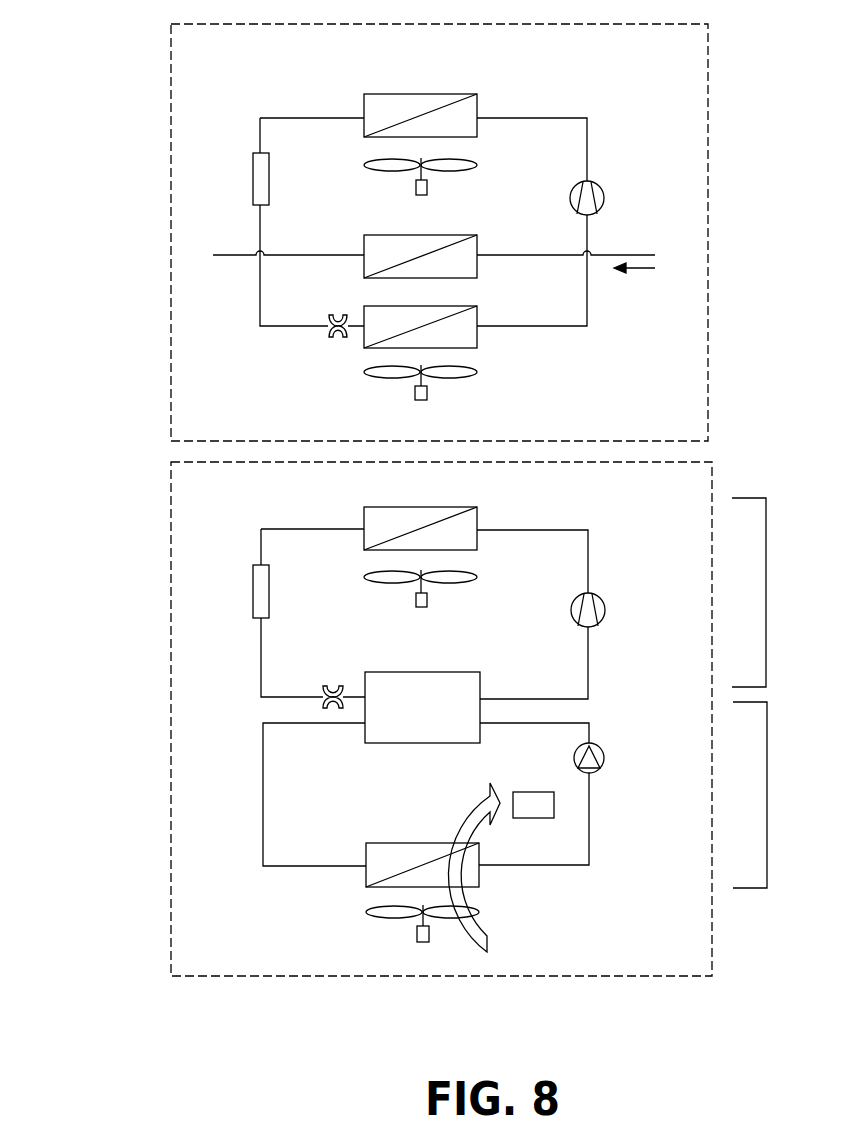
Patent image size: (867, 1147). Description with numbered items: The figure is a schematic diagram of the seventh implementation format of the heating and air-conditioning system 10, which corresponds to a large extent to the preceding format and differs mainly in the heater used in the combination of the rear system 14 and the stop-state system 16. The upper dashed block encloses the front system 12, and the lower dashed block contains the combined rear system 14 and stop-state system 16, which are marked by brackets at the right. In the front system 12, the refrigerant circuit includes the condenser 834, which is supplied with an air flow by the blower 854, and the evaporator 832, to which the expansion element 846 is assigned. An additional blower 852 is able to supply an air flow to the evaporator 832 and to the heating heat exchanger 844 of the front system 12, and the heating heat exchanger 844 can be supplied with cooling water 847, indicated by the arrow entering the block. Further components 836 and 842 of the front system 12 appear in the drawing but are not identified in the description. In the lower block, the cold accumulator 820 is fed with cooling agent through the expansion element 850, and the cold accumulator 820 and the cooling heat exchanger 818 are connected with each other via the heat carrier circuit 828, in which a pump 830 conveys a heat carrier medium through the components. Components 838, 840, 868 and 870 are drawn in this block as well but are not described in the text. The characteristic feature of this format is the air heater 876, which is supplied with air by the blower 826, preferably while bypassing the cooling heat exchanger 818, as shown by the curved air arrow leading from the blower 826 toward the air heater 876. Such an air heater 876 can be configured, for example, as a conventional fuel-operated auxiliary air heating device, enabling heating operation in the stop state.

The heating and air-conditioning system 10 is at (120, 97).
The front system 12 is at (708, 203).
The rear system 14 is at (766, 579).
The stop-state system 16 is at (767, 800).
The cooling heat exchanger 818 is at (479, 878).
The cold accumulator 820 is at (480, 688).
The blower 826 is at (417, 935).
The heat carrier circuit 828 is at (263, 840).
The pump 830 is at (600, 748).
The evaporator 832 is at (477, 340).
The condenser 834 is at (436, 94).
The compressor 836 is at (600, 185).
The radiator 838 is at (436, 507).
The pump 840 is at (602, 598).
The accumulator 842 is at (253, 175).
The heating heat exchanger 844 is at (364, 235).
The expansion element 846 is at (338, 340).
The cooling water 847 is at (640, 268).
The expansion element 850 is at (334, 686).
The blower 852 is at (427, 395).
The blower 854 is at (427, 190).
The reservoir 868 is at (253, 585).
The fan 870 is at (427, 601).
The air heater 876 is at (537, 792).